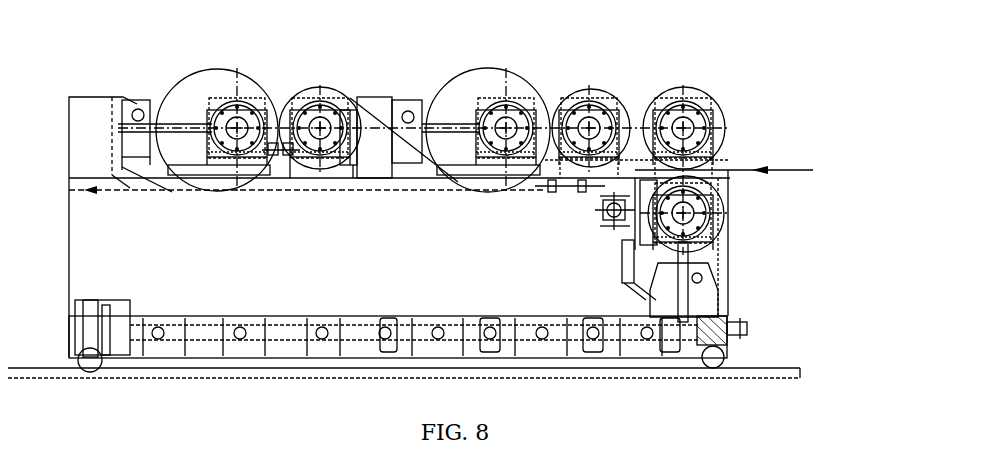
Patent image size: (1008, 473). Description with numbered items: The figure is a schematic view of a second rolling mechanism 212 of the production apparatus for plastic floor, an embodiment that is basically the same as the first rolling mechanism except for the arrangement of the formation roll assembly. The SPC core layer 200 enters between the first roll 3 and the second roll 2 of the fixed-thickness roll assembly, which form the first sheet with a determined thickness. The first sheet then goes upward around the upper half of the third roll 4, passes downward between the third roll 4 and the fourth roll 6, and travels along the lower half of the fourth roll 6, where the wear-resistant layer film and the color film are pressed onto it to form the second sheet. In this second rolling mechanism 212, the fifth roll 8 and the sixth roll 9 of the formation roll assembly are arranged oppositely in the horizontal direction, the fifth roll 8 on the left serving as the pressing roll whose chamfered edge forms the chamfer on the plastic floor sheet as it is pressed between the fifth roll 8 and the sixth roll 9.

The second roll 2 is at (723, 173).
The first roll 3 is at (707, 95).
The third roll 4 is at (597, 91).
The fourth roll 6 is at (511, 96).
The fifth roll 8 is at (327, 104).
The sixth roll 9 is at (243, 99).
The SPC core layer 200 is at (797, 170).
The second rolling mechanism 212 is at (767, 288).